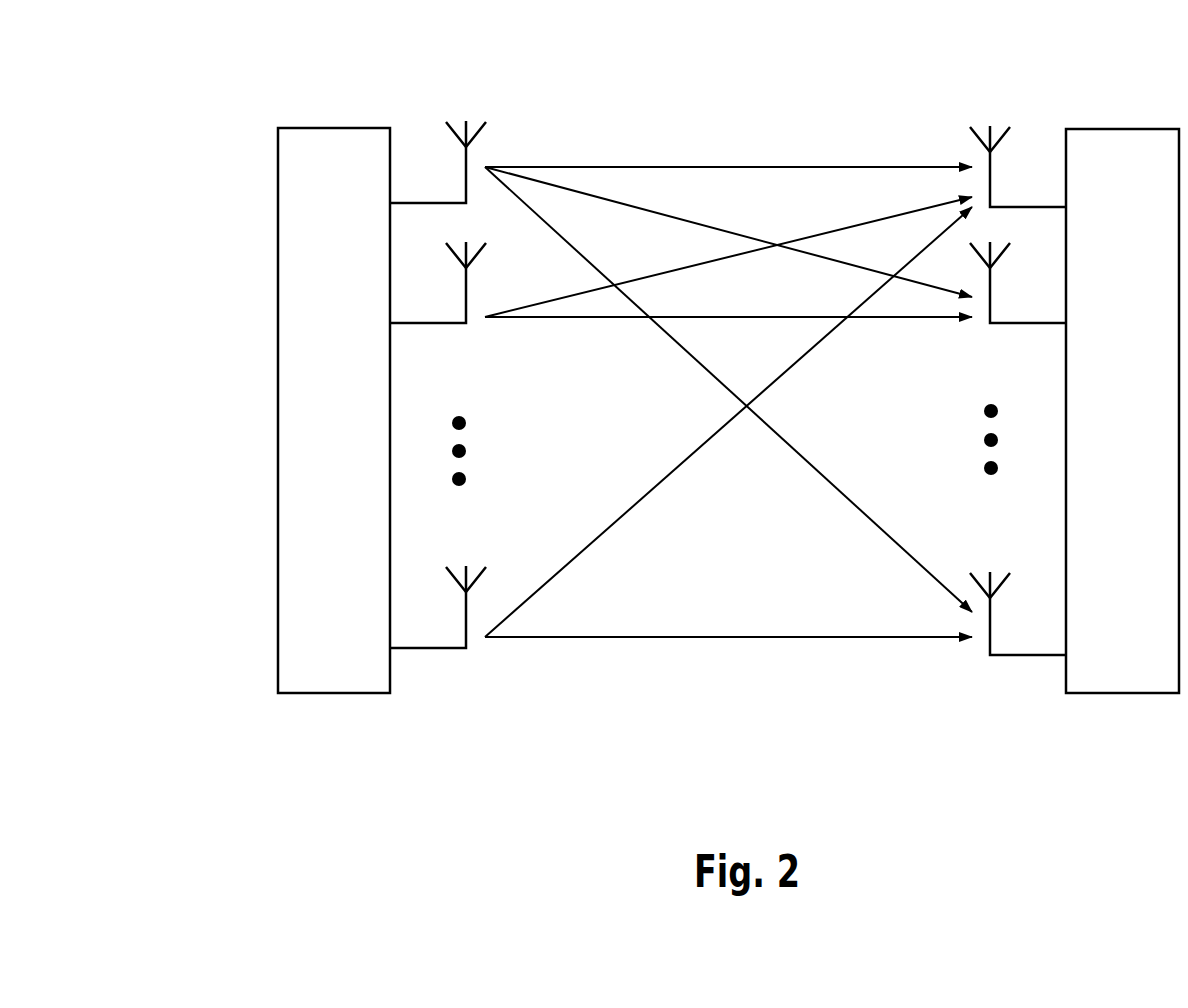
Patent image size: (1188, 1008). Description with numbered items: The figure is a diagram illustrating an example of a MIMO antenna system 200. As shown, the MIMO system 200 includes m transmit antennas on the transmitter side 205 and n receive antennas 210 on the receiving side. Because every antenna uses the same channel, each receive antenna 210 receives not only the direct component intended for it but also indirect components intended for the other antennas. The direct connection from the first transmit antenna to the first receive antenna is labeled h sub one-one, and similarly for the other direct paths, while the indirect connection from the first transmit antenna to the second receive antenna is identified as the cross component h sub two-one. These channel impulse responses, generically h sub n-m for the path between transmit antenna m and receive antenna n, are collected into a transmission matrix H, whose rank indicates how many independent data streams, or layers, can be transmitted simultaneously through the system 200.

The MIMO antenna system 200 is at (250, 72).
The transmitter 205 is at (433, 718).
The receive antennas 210 is at (1025, 716).